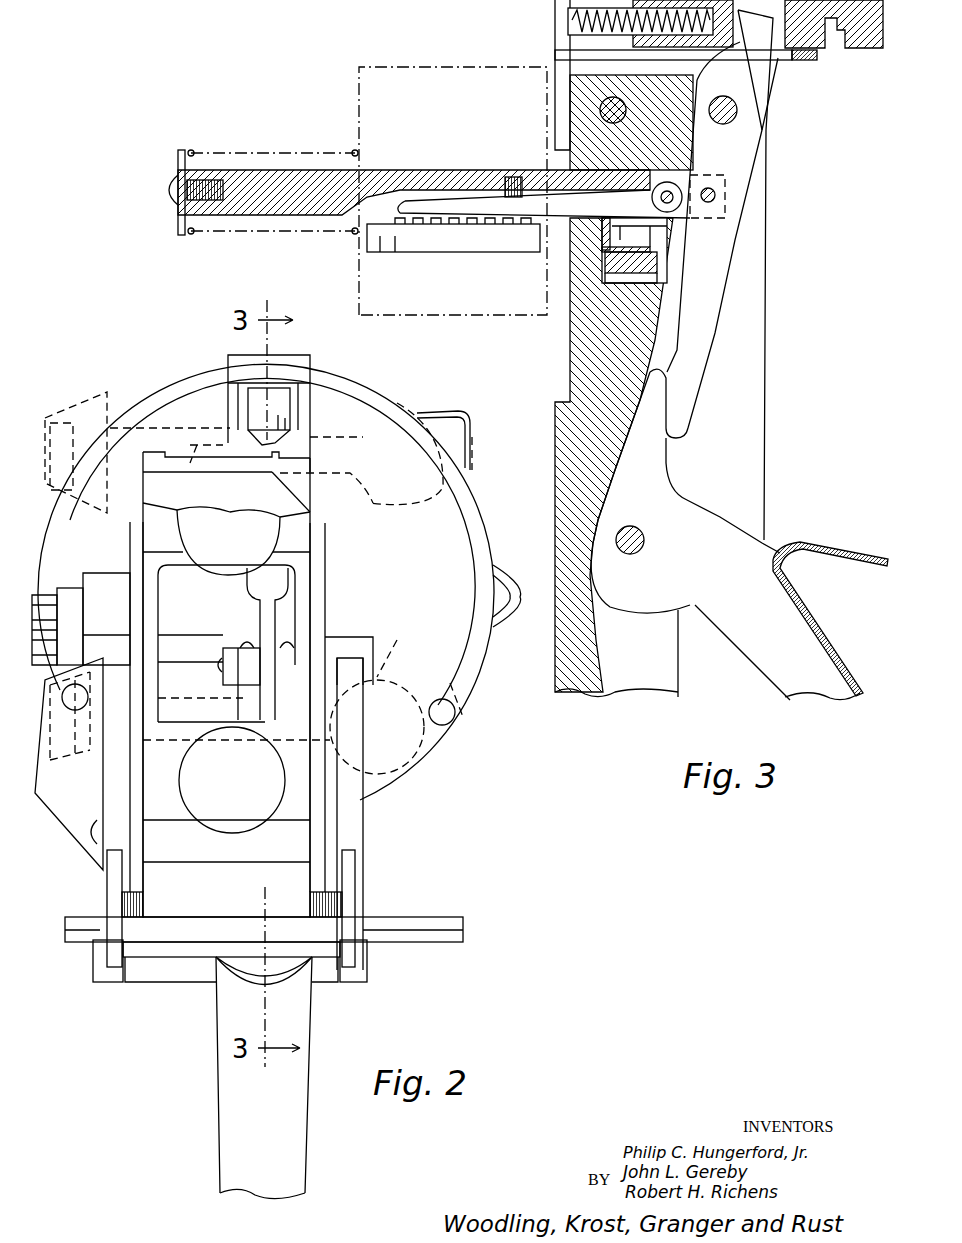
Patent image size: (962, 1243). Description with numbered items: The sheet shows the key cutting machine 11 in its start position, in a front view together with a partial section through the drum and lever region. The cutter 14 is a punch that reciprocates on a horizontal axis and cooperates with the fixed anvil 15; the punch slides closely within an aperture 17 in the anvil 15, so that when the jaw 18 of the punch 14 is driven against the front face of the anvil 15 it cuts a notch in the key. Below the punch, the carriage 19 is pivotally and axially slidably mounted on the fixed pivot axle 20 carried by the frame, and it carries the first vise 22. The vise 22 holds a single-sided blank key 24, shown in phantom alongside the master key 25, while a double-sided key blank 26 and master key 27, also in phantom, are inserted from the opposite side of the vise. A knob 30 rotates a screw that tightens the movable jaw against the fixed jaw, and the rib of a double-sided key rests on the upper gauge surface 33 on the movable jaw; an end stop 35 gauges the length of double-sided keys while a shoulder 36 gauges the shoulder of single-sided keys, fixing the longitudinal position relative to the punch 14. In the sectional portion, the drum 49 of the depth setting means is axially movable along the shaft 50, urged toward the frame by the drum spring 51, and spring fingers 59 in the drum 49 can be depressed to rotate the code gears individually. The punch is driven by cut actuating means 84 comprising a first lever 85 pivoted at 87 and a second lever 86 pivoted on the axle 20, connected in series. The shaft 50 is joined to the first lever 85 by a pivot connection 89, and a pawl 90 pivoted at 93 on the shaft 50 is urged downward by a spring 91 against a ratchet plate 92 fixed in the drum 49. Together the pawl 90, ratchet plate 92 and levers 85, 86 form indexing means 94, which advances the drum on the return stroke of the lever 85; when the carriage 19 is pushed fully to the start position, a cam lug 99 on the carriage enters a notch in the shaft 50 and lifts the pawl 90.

In FIG. 2, the key cutting machine 11 is at (420, 356).
In FIG. 3, the cutter 14 is at (845, 50).
In FIG. 2, the cutter 14 is at (257, 402).
In FIG. 2, the anvil 15 is at (260, 437).
In FIG. 2, the aperture 17 is at (275, 427).
In FIG. 3, the jaw 18 is at (689, 239).
In FIG. 3, the carriage 19 is at (620, 263).
In FIG. 2, the carriage 19 is at (348, 840).
In FIG. 3, the fixed pivot axle 20 is at (643, 530).
In FIG. 2, the fixed pivot axle 20 is at (420, 923).
In FIG. 2, the first vise 22 is at (158, 533).
In FIG. 2, the blank key 24 is at (397, 403).
In FIG. 2, the master key 25 is at (395, 655).
In FIG. 2, the key blank 26 is at (88, 393).
In FIG. 2, the master key 27 is at (69, 764).
In FIG. 2, the knob 30 is at (243, 546).
In FIG. 2, the upper gauge surface 33 is at (287, 433).
In FIG. 2, the end stop 35 is at (275, 458).
In FIG. 2, the shoulder 36 is at (293, 440).
In FIG. 3, the drum 49 is at (358, 108).
In FIG. 3, the shaft 50 is at (270, 170).
In FIG. 3, the drum spring 51 is at (190, 152).
In FIG. 2, the spring fingers 59 is at (467, 420).
In FIG. 3, the cut actuating means 84 is at (697, 517).
In FIG. 3, the first lever 85 is at (717, 323).
In FIG. 3, the second lever 86 is at (750, 547).
In FIG. 2, the second lever 86 is at (227, 1098).
In FIG. 3, the pivot 87 is at (740, 115).
In FIG. 3, the pivot connection 89 is at (722, 195).
In FIG. 3, the pawl 90 is at (442, 192).
In FIG. 3, the spring 91 is at (513, 178).
In FIG. 3, the ratchet plate 92 is at (500, 253).
In FIG. 3, the pivot 93 is at (673, 193).
In FIG. 3, the indexing means 94 is at (407, 253).
In FIG. 3, the cam lug 99 is at (603, 238).